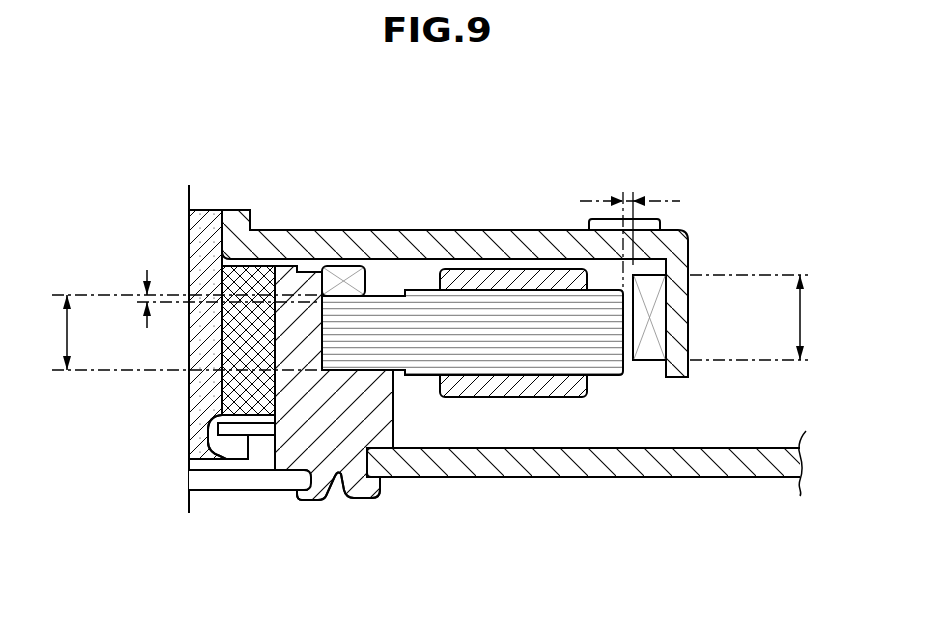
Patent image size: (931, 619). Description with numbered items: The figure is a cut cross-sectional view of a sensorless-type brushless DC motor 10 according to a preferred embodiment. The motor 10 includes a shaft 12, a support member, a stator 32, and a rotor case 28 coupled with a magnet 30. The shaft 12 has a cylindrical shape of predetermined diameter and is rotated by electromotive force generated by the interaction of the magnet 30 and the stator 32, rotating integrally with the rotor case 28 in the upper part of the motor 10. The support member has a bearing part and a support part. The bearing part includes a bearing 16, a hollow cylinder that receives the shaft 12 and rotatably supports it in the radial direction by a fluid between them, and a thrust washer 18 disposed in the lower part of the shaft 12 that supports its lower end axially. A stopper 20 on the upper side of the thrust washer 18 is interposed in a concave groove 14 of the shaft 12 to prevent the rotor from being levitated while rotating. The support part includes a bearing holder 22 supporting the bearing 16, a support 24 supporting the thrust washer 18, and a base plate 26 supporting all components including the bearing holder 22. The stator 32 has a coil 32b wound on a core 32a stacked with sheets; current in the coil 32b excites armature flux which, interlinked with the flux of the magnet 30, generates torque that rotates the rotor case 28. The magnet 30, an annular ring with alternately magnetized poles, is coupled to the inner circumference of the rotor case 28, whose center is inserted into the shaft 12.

The sensorless-type brushless DC motor 10 is at (428, 126).
The shaft 12 is at (198, 232).
The concave groove 14 is at (213, 430).
The bearing 16 is at (238, 392).
The thrust washer 18 is at (225, 464).
The stopper 20 is at (240, 432).
The bearing holder 22 is at (338, 450).
The support 24 is at (303, 483).
The base plate 26 is at (453, 460).
The rotor case 28 is at (677, 262).
The magnet 30 is at (652, 350).
The stator 32 is at (473, 437).
The core 32a is at (557, 352).
The coil 32b is at (518, 390).